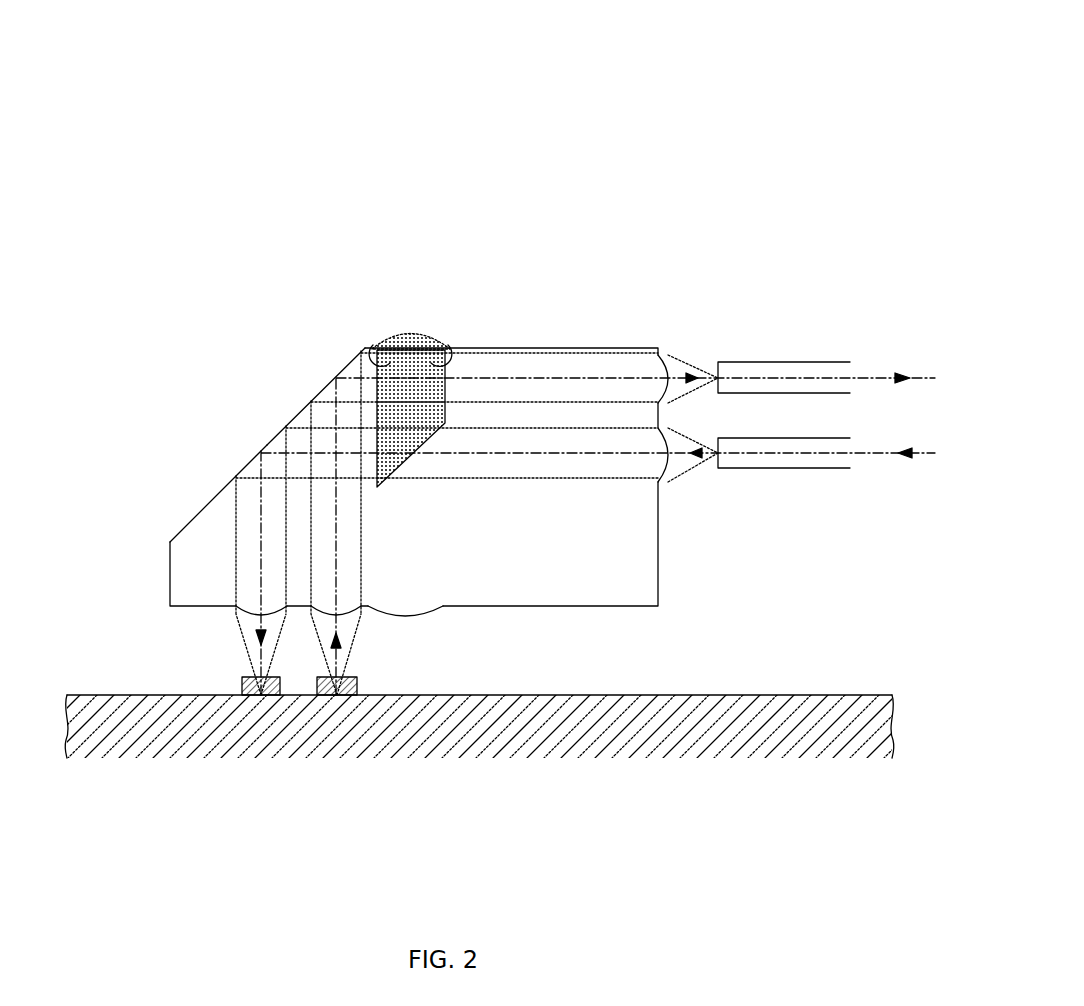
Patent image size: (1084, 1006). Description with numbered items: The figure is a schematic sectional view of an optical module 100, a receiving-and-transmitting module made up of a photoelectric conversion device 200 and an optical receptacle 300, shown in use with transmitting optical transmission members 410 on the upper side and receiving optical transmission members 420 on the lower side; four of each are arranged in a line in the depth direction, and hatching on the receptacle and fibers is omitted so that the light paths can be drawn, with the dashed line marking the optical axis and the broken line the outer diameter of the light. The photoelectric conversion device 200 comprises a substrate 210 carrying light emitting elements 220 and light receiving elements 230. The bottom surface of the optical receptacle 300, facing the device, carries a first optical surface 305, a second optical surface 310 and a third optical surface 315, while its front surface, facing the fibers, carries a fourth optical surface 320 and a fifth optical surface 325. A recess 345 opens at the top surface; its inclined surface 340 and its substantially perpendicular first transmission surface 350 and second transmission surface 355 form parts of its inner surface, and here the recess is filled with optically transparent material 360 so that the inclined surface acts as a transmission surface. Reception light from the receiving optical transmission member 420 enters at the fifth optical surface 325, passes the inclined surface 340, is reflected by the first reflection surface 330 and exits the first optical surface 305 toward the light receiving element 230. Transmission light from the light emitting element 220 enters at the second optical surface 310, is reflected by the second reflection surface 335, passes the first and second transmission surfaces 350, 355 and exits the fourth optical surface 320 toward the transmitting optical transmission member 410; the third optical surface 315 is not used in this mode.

The optical module 100 is at (778, 97).
The photoelectric conversion device 200 is at (127, 640).
The substrate 210 is at (818, 695).
The light emitting element 220 is at (335, 695).
The light receiving element 230 is at (260, 695).
The optical receptacle 300 is at (201, 293).
The first optical surface 305 is at (246, 622).
The second optical surface 310 is at (348, 623).
The third optical surface 315 is at (427, 623).
The fourth optical surface 320 is at (679, 362).
The fifth optical surface 325 is at (674, 462).
The first reflection surface 330 is at (257, 457).
The second reflection surface 335 is at (316, 388).
The inclined surface 340 is at (407, 457).
The recess 345 is at (421, 306).
The first transmission surface 350 is at (380, 340).
The second transmission surface 355 is at (443, 337).
The optically transparent material 360 is at (421, 340).
The transmitting optical transmission member 410 is at (783, 363).
The receiving optical transmission member 420 is at (790, 468).